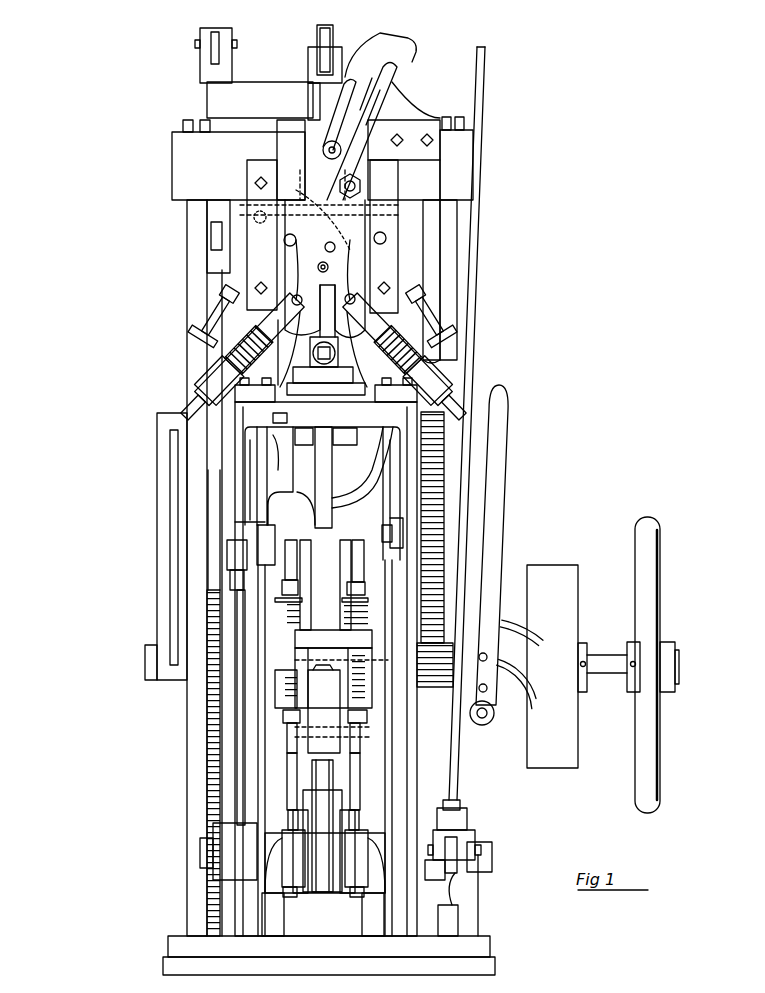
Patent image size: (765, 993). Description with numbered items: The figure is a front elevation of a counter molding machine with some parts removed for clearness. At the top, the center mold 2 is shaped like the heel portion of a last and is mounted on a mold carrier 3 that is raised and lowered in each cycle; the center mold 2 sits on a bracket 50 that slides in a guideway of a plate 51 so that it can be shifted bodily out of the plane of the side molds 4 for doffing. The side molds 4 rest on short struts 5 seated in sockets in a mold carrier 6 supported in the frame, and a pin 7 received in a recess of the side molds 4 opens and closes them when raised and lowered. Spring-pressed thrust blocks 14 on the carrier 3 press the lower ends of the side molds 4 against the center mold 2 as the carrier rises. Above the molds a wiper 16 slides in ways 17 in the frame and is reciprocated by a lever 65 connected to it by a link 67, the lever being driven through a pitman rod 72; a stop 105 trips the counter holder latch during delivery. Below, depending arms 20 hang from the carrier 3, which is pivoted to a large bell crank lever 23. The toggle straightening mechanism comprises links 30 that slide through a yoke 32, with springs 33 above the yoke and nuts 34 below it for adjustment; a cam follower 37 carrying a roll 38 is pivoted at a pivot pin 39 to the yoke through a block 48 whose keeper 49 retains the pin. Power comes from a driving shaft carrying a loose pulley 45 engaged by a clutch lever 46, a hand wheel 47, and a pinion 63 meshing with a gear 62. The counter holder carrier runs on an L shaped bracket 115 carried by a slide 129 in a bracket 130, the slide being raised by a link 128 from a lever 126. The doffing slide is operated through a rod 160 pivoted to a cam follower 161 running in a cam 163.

The center mold 2 is at (318, 312).
The mold carrier 3 is at (398, 410).
The side molds 4 is at (293, 263).
The short struts 5 is at (284, 240).
The mold carrier 6 is at (256, 209).
The pin 7 is at (320, 254).
The spring-pressed thrust blocks 14 is at (268, 330).
The wiper 16 is at (285, 145).
The ways 17 is at (250, 192).
The depending arms 20 is at (250, 503).
The bell crank lever 23 is at (330, 510).
The links 30 is at (286, 740).
The yoke 32 is at (372, 686).
The springs 33 is at (297, 590).
The nuts 34 is at (283, 718).
The cam follower 37 is at (293, 785).
The roll 38 is at (325, 715).
The pivot pin 39 is at (375, 662).
The loose pulley 45 is at (551, 763).
The lever 46 is at (497, 556).
The hand wheel 47 is at (648, 740).
The block 48 is at (340, 648).
The keeper 49 is at (325, 665).
The bracket 50 is at (338, 352).
The plate 51 is at (355, 379).
The gear 62 is at (455, 468).
The pinion 63 is at (437, 672).
The lever 65 is at (330, 34).
The link 67 is at (320, 137).
The pitman rod 72 is at (165, 565).
The stop 105 is at (432, 322).
The L shaped bracket 115 is at (290, 418).
The lever 126 is at (228, 866).
The link 128 is at (243, 747).
The slide 129 is at (280, 480).
The bracket 130 is at (260, 605).
The rod 160 is at (478, 240).
The cam follower 161 is at (452, 860).
The cam 163 is at (447, 752).